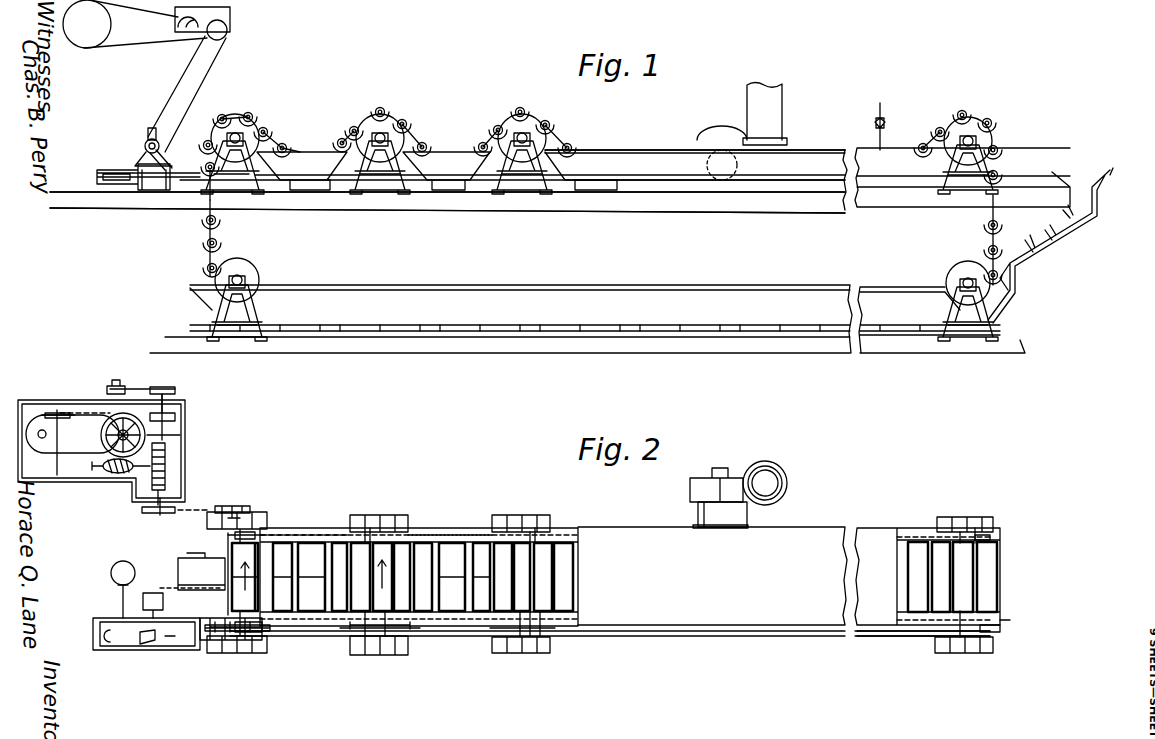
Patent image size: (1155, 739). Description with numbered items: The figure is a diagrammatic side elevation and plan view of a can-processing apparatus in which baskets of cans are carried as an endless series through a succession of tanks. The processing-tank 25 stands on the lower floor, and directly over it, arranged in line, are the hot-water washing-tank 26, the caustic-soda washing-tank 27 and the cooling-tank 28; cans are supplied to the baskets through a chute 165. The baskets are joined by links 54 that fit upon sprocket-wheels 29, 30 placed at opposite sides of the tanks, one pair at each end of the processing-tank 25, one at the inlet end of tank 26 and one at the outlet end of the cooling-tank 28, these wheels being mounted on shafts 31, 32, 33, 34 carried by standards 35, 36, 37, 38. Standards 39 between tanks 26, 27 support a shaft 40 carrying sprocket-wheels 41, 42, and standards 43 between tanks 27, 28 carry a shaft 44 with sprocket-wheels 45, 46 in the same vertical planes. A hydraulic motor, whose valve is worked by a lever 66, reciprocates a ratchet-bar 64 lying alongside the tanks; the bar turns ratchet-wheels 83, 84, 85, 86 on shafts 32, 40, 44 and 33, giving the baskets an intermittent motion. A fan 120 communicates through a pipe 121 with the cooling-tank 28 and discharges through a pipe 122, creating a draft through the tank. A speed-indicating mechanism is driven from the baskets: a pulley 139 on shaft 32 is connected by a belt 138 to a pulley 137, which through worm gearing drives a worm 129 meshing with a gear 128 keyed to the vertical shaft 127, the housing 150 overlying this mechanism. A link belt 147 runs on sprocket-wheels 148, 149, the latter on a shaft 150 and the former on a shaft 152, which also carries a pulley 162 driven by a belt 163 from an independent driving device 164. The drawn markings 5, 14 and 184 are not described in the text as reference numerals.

In FIG. 2, the direction of travel 5 is at (322, 575).
In FIG. 2, the shaft 14 is at (262, 632).
In FIG. 1, the processing-tank 25 is at (501, 319).
In FIG. 1, the hot-water washing-tank 26 is at (302, 171).
In FIG. 2, the hot-water washing-tank 26 is at (318, 528).
In FIG. 1, the caustic-soda washing-tank 27 is at (446, 170).
In FIG. 2, the caustic-soda washing-tank 27 is at (448, 528).
In FIG. 1, the cooling-tank 28 is at (695, 165).
In FIG. 2, the cooling-tank 28 is at (578, 528).
In FIG. 2, the sprocket-wheels 29 is at (228, 536).
In FIG. 2, the sprocket-wheels 30 is at (225, 625).
In FIG. 1, the shaft 31 is at (242, 280).
In FIG. 1, the shaft 32 is at (243, 137).
In FIG. 2, the shaft 32 is at (250, 655).
In FIG. 1, the shaft 33 is at (978, 140).
In FIG. 2, the shaft 33 is at (975, 530).
In FIG. 1, the shaft 34 is at (963, 283).
In FIG. 1, the standard 35 is at (210, 323).
In FIG. 1, the standard 36 is at (218, 180).
In FIG. 2, the standard 36 is at (262, 514).
In FIG. 1, the standard 37 is at (953, 175).
In FIG. 2, the standard 37 is at (945, 520).
In FIG. 1, the standard 38 is at (950, 305).
In FIG. 1, the standards 39 is at (366, 172).
In FIG. 2, the standards 39 is at (398, 517).
In FIG. 1, the shaft 40 is at (385, 136).
In FIG. 2, the shaft 40 is at (385, 630).
In FIG. 2, the sprocket-wheel 41 is at (370, 530).
In FIG. 2, the sprocket-wheel 42 is at (366, 634).
In FIG. 1, the standards 43 is at (503, 190).
In FIG. 2, the standards 43 is at (505, 517).
In FIG. 1, the shaft 44 is at (526, 136).
In FIG. 2, the shaft 44 is at (522, 650).
In FIG. 2, the sprocket-wheel 45 is at (540, 528).
In FIG. 2, the sprocket-wheel 46 is at (535, 636).
In FIG. 1, the links 54 is at (345, 141).
In FIG. 2, the links 54 is at (347, 530).
In FIG. 1, the ratchet-bar 64 is at (625, 182).
In FIG. 2, the ratchet-bar 64 is at (490, 632).
In FIG. 1, the lever 66 is at (143, 151).
In FIG. 2, the ratchet-wheel 83 is at (215, 640).
In FIG. 2, the ratchet-wheel 84 is at (355, 640).
In FIG. 2, the ratchet-wheel 85 is at (502, 640).
In FIG. 2, the ratchet-wheel 86 is at (940, 637).
In FIG. 2, the fan 120 is at (710, 490).
In FIG. 2, the pipe 121 is at (727, 517).
In FIG. 1, the pipe 122 is at (780, 104).
In FIG. 2, the pipe 122 is at (770, 483).
In FIG. 2, the vertical shaft 127 is at (146, 435).
In FIG. 2, the gear 128 is at (150, 430).
In FIG. 2, the worm 129 is at (100, 465).
In FIG. 2, the pulley 137 is at (152, 513).
In FIG. 2, the belt 138 is at (225, 505).
In FIG. 2, the pulley 139 is at (248, 508).
In FIG. 2, the link belt 147 is at (80, 412).
In FIG. 2, the sprocket-wheel 148 is at (172, 412).
In FIG. 2, the sprocket-wheel 149 is at (55, 410).
In FIG. 2, the shaft 150 is at (72, 434).
In FIG. 2, the shaft 152 is at (168, 395).
In FIG. 2, the pulley 162 is at (172, 389).
In FIG. 2, the belt 163 is at (160, 382).
In FIG. 2, the independent driving device 164 is at (119, 378).
In FIG. 1, the chute 165 is at (1073, 228).
In FIG. 2, the worm gear 184 is at (168, 452).